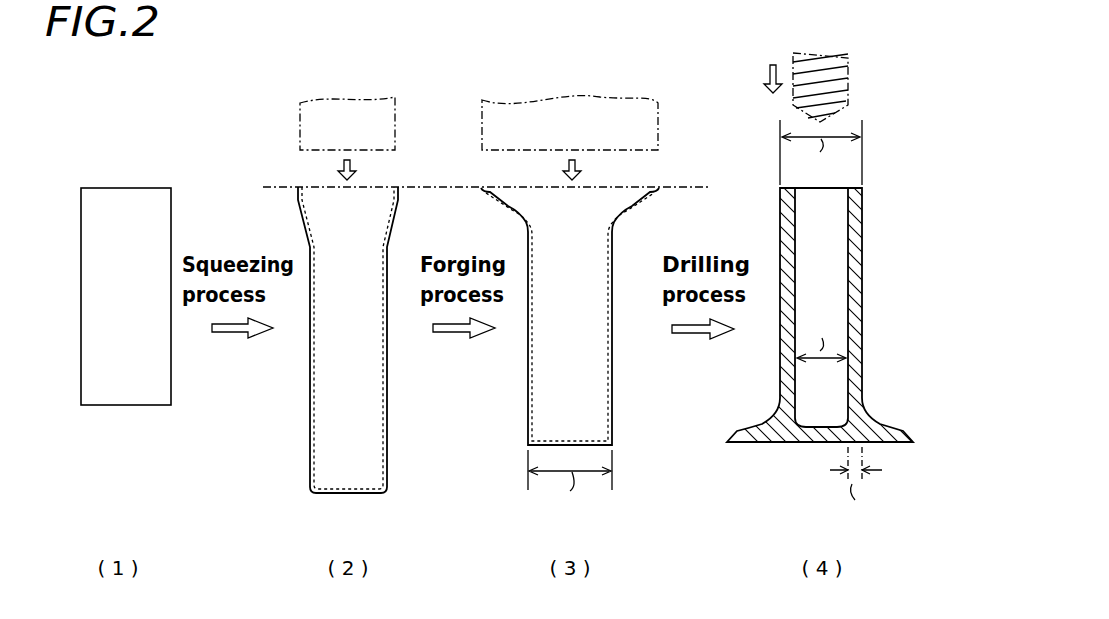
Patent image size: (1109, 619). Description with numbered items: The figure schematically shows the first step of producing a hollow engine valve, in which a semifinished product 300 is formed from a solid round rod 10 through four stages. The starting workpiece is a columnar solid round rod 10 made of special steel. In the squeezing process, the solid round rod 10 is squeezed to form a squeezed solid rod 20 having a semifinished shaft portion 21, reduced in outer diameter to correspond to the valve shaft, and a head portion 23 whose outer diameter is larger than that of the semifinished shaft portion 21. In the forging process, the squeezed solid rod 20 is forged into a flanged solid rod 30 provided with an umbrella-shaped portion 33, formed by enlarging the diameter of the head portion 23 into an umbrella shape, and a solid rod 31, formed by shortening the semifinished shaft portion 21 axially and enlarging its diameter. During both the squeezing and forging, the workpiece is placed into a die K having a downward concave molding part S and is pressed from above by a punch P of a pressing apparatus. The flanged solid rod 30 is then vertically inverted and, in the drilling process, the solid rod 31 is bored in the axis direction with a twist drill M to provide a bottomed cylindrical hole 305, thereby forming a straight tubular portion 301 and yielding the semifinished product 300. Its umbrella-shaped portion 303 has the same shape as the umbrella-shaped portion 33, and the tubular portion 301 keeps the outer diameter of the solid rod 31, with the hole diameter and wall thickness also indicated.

The solid round rod 10 is at (176, 365).
The squeezed solid rod 20 is at (349, 343).
The semifinished shaft portion 21 is at (387, 395).
The head portion 23 is at (298, 195).
The flanged solid rod 30 is at (587, 350).
The solid rod 31 is at (612, 345).
The umbrella-shaped portion 33 is at (628, 206).
The semifinished product 300 is at (850, 309).
The tubular portion 301 is at (862, 287).
The umbrella-shaped portion 303 is at (874, 425).
The cylindrical hole 305 is at (797, 203).
The punch P is at (300, 128).
The die K is at (417, 187).
The molding part S is at (312, 423).
The twist drill M is at (848, 86).